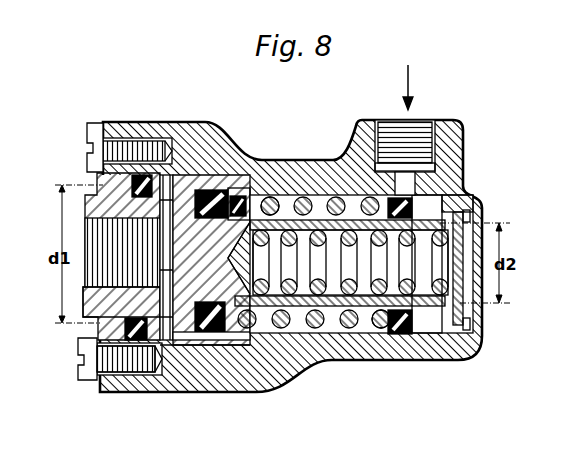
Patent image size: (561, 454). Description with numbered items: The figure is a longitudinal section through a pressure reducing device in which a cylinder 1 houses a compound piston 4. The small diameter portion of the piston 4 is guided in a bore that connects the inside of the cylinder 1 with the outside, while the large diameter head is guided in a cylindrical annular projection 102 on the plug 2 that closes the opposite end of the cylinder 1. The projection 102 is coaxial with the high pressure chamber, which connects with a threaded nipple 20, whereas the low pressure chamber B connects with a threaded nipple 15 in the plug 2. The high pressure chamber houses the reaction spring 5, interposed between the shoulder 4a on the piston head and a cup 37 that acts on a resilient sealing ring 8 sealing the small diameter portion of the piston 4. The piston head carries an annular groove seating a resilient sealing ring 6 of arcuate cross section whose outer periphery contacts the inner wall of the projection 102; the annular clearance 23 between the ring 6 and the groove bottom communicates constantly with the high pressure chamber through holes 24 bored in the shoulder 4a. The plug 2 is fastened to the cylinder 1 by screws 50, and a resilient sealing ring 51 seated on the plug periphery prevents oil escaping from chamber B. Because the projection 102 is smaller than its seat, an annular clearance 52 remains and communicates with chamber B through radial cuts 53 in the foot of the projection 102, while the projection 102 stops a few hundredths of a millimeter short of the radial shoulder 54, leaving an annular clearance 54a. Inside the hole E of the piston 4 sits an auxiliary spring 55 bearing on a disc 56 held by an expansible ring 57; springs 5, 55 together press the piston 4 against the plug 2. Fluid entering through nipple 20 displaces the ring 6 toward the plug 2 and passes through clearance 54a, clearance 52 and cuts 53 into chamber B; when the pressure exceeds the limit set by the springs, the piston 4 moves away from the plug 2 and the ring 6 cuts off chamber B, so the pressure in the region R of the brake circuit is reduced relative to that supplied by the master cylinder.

The cylinder 1 is at (247, 158).
The plug 2 is at (88, 312).
The compound piston 4 is at (262, 342).
The shoulder 4a is at (237, 335).
The reaction spring 5 is at (283, 196).
The resilient sealing ring 6 is at (207, 348).
The resilient sealing ring 8 is at (415, 207).
The threaded nipple 15 is at (118, 270).
The threaded nipple 20 is at (418, 140).
The annular clearance 23 is at (211, 260).
The holes 24 is at (260, 195).
The cup 37 is at (375, 330).
The screws 50 is at (87, 380).
The resilient sealing ring 51 is at (125, 150).
The annular clearance 52 is at (160, 380).
The radial cuts 53 is at (203, 188).
The radial shoulder 54 is at (233, 188).
The annular clearance 54a is at (232, 334).
The auxiliary spring 55 is at (415, 337).
The disc 56 is at (462, 290).
The expansible ring 57 is at (462, 322).
The cylindrical annular projection 102 is at (180, 375).
The low pressure chamber B is at (234, 194).
The hole E is at (300, 296).
The spring chamber R is at (335, 307).